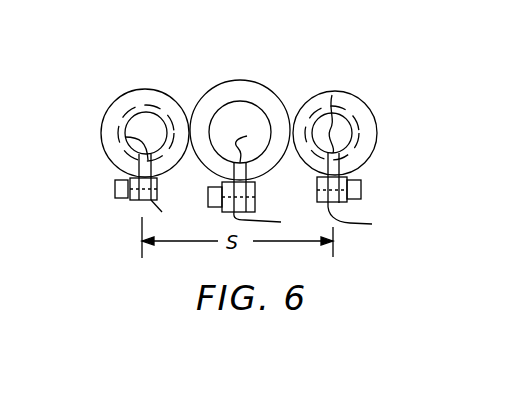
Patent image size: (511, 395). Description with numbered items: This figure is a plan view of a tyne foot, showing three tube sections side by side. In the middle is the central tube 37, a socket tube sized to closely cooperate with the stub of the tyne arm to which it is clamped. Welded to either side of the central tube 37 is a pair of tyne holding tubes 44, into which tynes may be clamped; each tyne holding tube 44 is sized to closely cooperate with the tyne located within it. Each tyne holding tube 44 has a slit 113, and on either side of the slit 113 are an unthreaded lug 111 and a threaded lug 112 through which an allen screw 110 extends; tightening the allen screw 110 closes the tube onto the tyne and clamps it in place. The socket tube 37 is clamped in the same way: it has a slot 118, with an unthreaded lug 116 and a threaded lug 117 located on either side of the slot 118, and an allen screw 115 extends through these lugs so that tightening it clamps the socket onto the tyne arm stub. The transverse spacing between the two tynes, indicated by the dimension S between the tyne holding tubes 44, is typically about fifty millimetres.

The tyne holding tube 44 is at (122, 92).
The central tube 37 is at (244, 82).
The slit 113 is at (125, 137).
The slot 118 is at (240, 164).
The allen screw 110 is at (118, 198).
The unthreaded lug 111 is at (132, 203).
The threaded lug 112 is at (277, 220).
The allen screw 115 is at (210, 195).
The threaded lug 117 is at (256, 207).
The unthreaded lug 116 is at (273, 222).